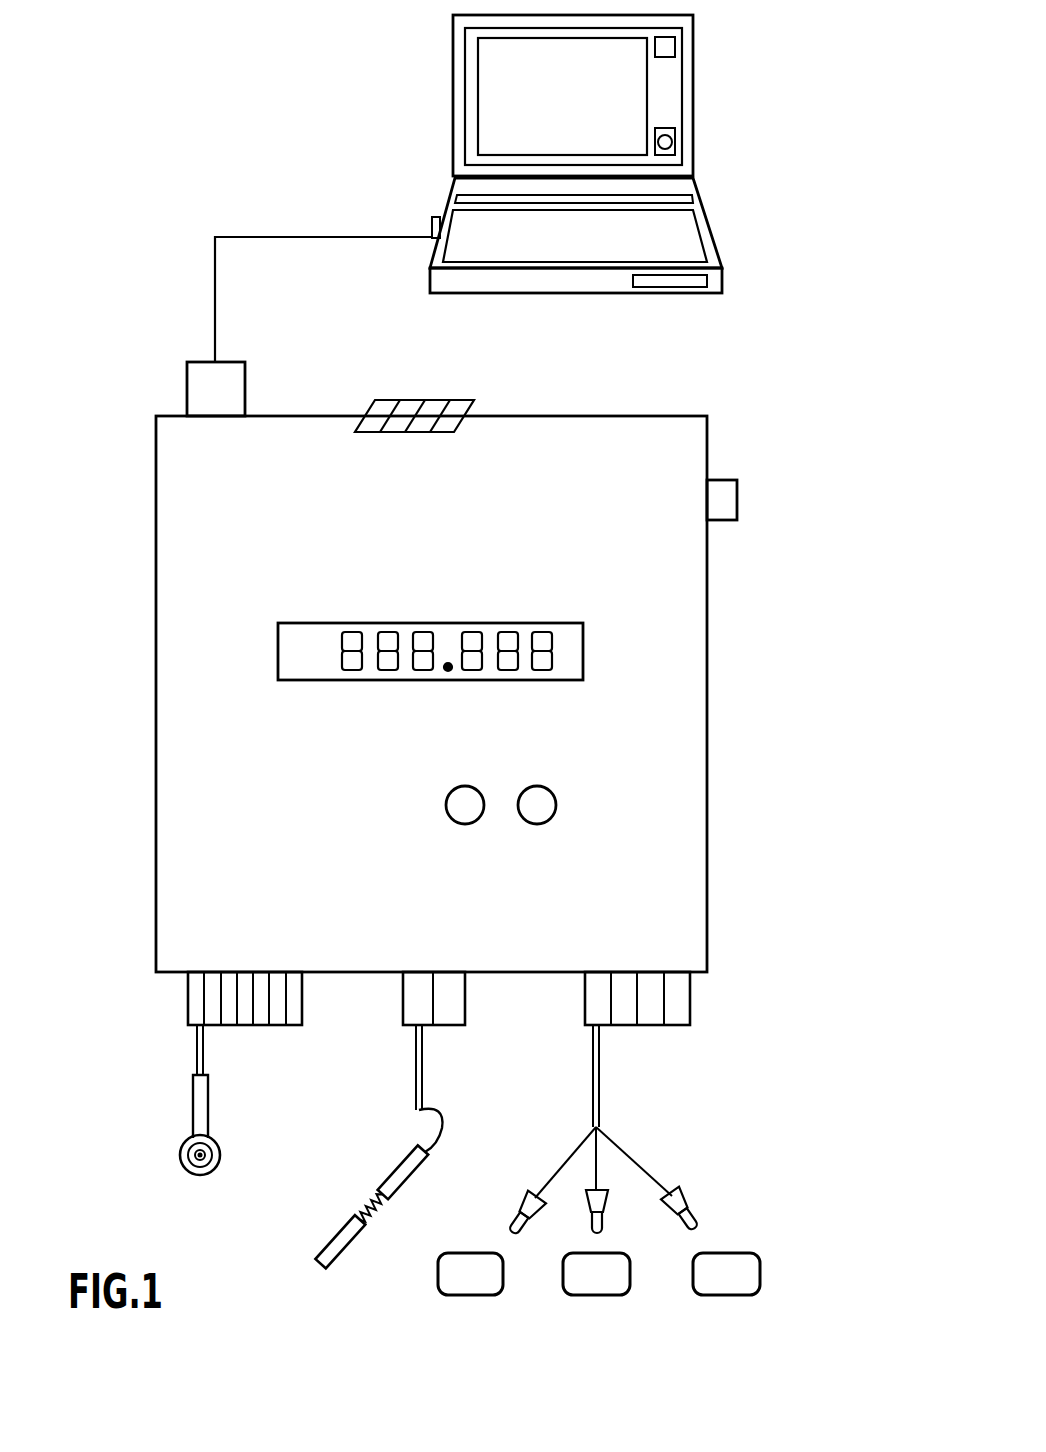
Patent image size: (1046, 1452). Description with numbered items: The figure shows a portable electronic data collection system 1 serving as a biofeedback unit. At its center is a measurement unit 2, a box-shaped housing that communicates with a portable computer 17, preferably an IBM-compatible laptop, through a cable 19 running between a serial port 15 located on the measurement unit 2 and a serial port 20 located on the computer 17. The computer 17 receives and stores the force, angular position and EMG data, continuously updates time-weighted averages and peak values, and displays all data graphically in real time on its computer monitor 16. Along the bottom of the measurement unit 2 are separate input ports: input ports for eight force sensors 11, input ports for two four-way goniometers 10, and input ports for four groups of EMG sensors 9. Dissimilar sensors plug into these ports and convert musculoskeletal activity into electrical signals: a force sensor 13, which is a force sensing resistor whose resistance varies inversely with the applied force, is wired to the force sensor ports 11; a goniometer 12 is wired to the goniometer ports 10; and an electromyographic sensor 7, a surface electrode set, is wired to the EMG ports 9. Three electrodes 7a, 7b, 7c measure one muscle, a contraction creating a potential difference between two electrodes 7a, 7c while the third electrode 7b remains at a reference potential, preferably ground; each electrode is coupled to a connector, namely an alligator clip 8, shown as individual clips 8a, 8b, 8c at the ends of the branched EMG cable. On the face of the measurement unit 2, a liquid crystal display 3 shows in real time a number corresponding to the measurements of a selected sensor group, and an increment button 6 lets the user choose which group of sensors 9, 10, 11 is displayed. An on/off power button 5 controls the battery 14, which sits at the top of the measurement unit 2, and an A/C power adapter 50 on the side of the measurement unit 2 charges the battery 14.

The portable electronic data collection system 1 is at (205, 177).
The measurement unit 2 is at (708, 700).
The liquid crystal display 3 is at (302, 683).
The on/off power button 5 is at (540, 786).
The increment button 6 is at (467, 786).
The electromyographic (EMG) sensor 7 is at (656, 1291).
The electrode 7a is at (452, 1295).
The third electrode 7b is at (590, 1295).
The electrode 7c is at (720, 1295).
The alligator clip 8 is at (623, 1135).
The alligator clip 8a is at (517, 1223).
The alligator clip 8b is at (591, 1220).
The alligator clip 8c is at (680, 1222).
The input ports for EMG sensors 9 is at (645, 1027).
The input ports for goniometers 10 is at (437, 1027).
The input ports for force sensors 11 is at (238, 1027).
The goniometer 12 is at (412, 1173).
The force sensor 13 is at (221, 1149).
The battery 14 is at (445, 398).
The serial port 15 is at (187, 402).
The computer monitor 16 is at (508, 40).
The portable computer 17 is at (614, 154).
The cable 19 is at (215, 288).
The serial port 20 is at (432, 222).
The A/C power adapter 50 is at (724, 480).